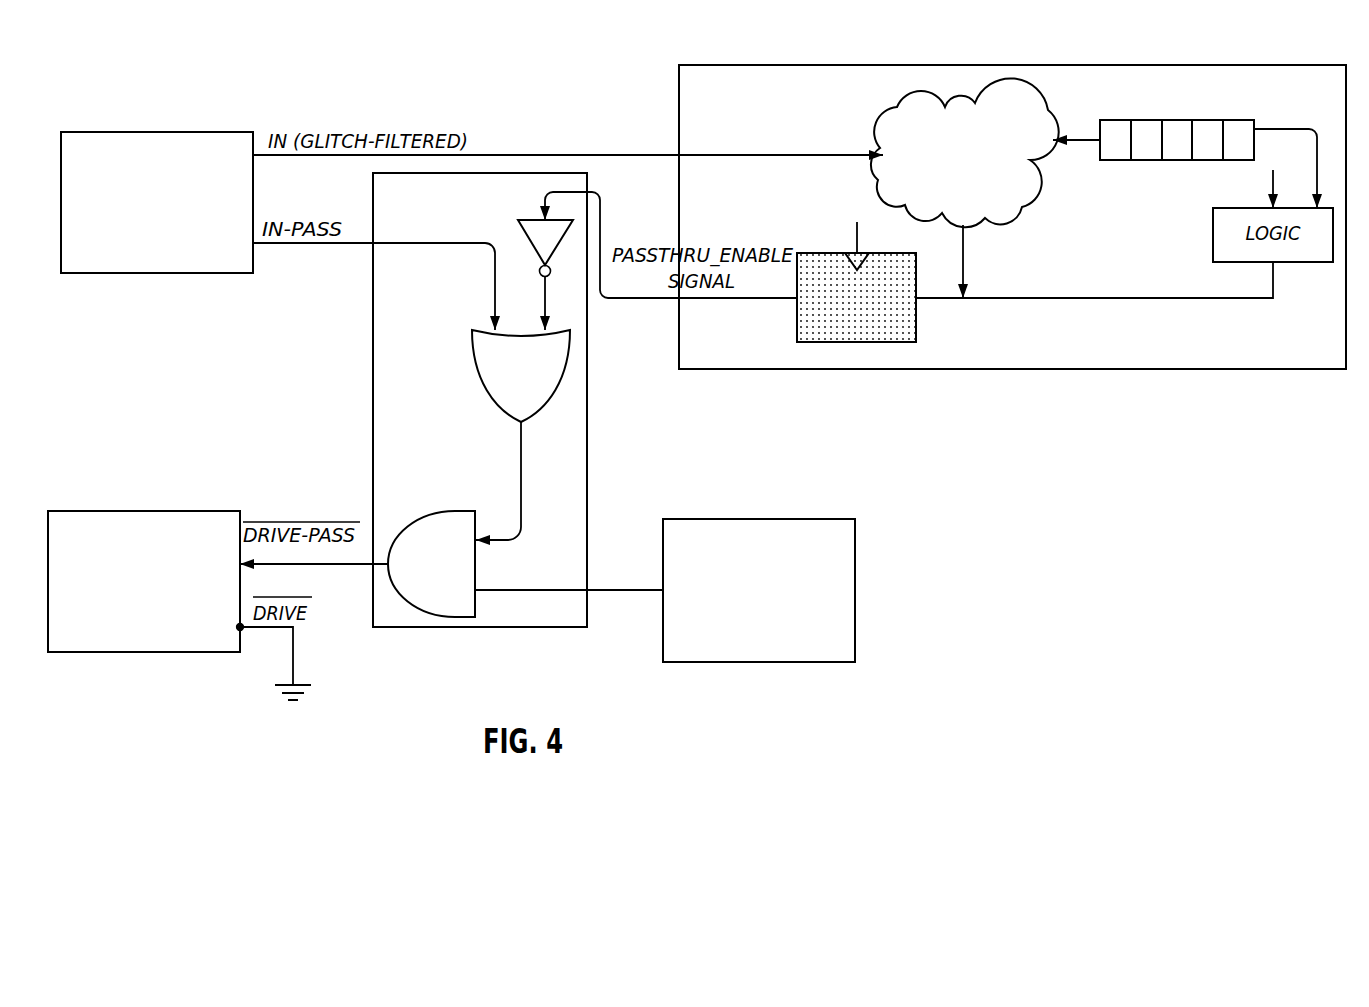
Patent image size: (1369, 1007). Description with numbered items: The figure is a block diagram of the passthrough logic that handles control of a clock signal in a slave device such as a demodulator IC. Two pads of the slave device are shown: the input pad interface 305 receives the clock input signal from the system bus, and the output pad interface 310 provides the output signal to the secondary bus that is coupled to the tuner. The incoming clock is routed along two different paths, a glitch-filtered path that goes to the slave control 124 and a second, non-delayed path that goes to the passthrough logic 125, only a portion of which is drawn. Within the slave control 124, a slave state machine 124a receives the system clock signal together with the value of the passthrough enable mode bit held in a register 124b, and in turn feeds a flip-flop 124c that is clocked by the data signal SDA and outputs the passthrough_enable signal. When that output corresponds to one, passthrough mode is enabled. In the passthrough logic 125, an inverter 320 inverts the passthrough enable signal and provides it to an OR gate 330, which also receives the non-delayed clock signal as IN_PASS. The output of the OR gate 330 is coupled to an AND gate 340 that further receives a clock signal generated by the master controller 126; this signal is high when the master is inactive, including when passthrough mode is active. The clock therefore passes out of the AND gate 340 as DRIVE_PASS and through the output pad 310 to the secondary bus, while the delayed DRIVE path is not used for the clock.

The input pad interface 305 is at (157, 132).
The output pad interface 310 is at (145, 511).
The passthrough logic 125 is at (587, 450).
The inverter 320 is at (560, 248).
The OR gate 330 is at (562, 383).
The AND gate 340 is at (428, 612).
The master controller 126 is at (855, 588).
The slave control 124 is at (828, 65).
The slave state machine 124a is at (963, 100).
The register 124b is at (1178, 120).
The flip-flop 124c is at (857, 342).